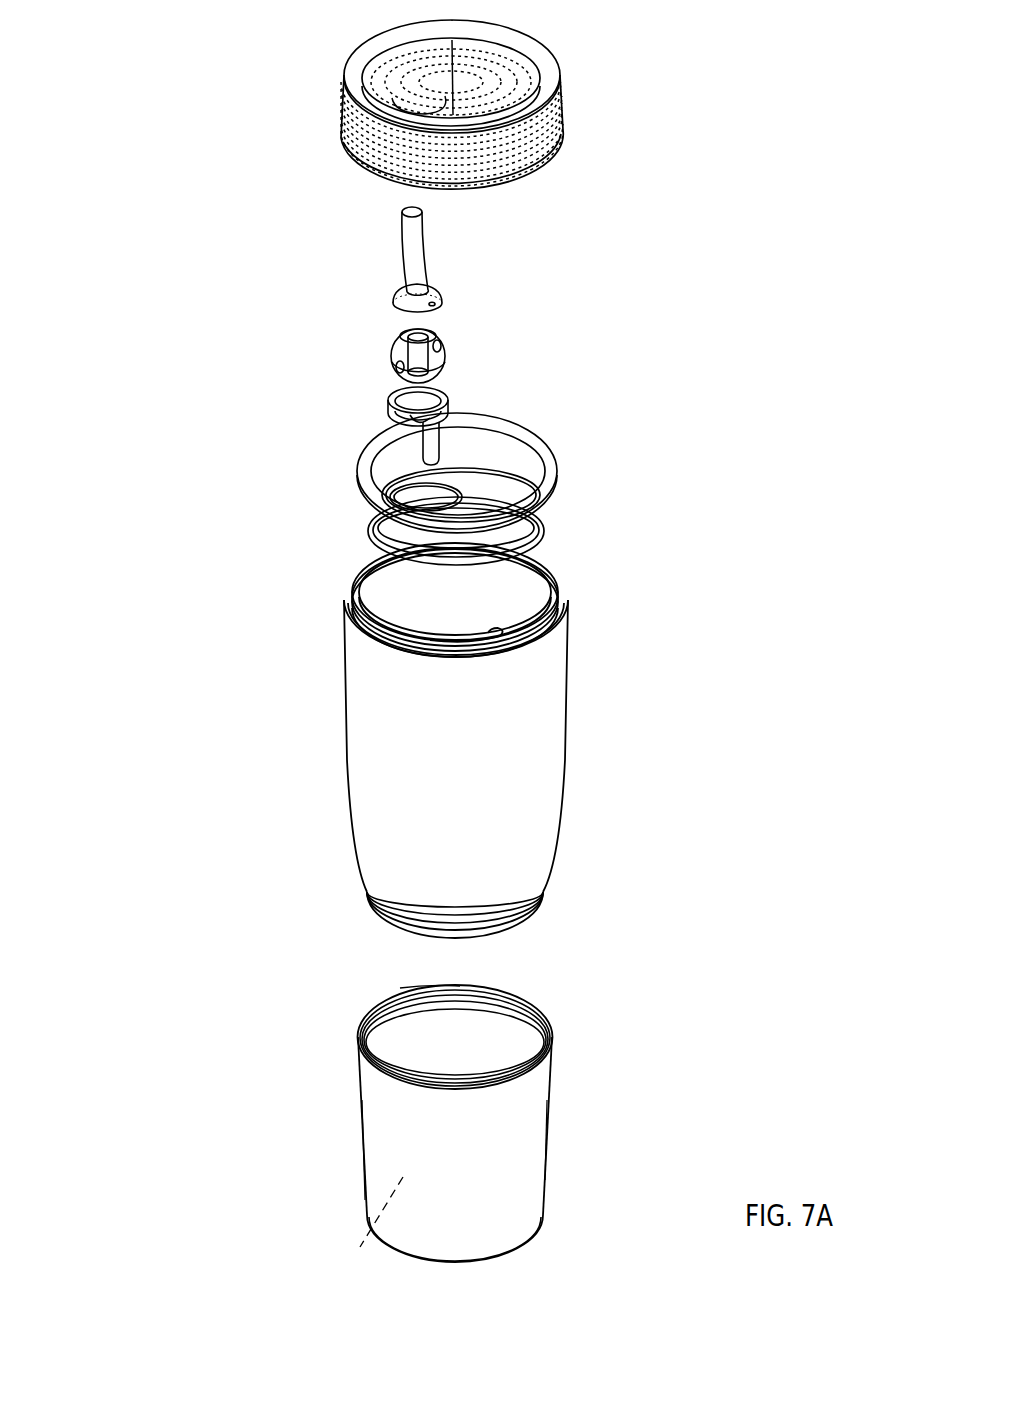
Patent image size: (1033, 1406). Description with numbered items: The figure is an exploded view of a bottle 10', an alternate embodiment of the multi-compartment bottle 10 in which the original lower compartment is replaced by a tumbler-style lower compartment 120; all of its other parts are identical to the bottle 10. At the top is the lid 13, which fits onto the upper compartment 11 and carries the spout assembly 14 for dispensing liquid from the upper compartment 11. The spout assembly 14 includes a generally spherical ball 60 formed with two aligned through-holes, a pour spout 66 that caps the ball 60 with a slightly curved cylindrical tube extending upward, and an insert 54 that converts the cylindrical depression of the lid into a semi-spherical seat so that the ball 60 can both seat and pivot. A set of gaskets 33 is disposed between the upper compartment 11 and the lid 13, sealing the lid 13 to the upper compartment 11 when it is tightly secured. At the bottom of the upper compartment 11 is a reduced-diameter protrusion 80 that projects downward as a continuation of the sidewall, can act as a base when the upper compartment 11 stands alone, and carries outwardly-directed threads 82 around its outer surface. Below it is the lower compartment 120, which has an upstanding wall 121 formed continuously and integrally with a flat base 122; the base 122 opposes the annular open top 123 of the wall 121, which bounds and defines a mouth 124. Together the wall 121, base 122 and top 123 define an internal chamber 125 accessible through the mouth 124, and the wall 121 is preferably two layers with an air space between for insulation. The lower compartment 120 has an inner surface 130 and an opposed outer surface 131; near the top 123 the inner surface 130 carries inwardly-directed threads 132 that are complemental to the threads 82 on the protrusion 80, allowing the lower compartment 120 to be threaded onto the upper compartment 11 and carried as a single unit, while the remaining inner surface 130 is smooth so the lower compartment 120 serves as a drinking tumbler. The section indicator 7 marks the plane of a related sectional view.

The multi-compartment bottle 10 is at (257, 31).
The bottle 10' is at (712, 654).
The lid 13 is at (328, 107).
The spout assembly 14 is at (248, 192).
The pour spout 66 is at (436, 298).
The ball 60 is at (444, 352).
The insert 54 is at (448, 410).
The gaskets 33 is at (367, 518).
The upper compartment 11 is at (350, 786).
The protrusion 80 is at (382, 921).
The threads 82 is at (542, 893).
The section line 7- 7 is at (520, 994).
The lower compartment 120 is at (526, 1168).
The wall 121 is at (530, 1127).
The base 122 is at (442, 1262).
The open top 123 is at (360, 1019).
The mouth 124 is at (508, 1040).
The internal chamber 125 is at (398, 1034).
The inner surface 130 is at (466, 1061).
The outer surface 131 is at (466, 1173).
The threads 132 is at (428, 990).